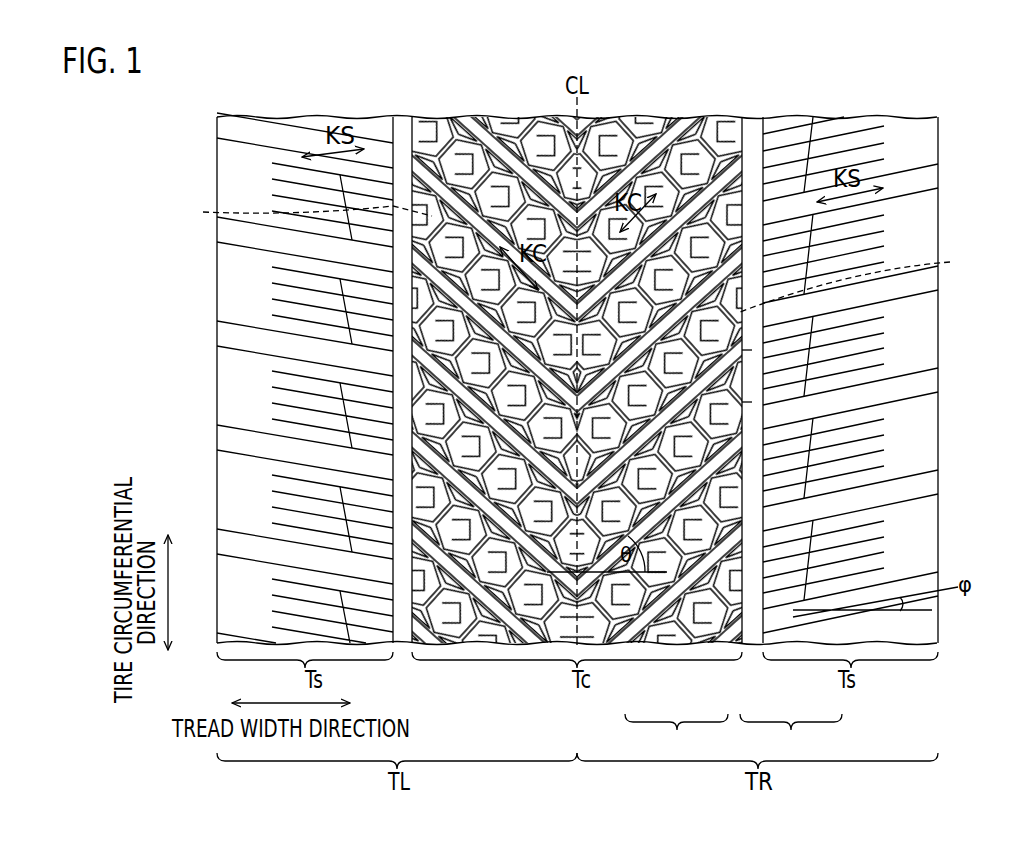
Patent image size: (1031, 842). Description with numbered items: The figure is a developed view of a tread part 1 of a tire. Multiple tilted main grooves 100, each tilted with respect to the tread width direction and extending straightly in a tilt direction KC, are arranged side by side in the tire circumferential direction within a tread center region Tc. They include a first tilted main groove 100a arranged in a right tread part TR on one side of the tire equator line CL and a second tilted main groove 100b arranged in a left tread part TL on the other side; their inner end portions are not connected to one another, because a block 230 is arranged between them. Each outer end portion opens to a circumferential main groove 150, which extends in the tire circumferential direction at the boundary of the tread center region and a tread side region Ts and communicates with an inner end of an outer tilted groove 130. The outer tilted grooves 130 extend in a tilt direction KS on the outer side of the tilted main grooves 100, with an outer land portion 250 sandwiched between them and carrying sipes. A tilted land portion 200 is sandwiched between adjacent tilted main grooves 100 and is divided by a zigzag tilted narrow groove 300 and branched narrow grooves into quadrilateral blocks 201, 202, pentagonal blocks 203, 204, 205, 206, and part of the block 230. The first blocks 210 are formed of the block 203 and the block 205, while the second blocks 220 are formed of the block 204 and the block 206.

The tread part 1 is at (866, 60).
The tilted main groove 100 is at (576, 331).
The first tilted main groove 100a is at (661, 352).
The second tilted main groove 100b is at (420, 178).
The outer tilted groove 130 is at (212, 130).
The circumferential main groove 150 is at (401, 110).
The tilted land portion 200 is at (414, 300).
The block 201 is at (748, 356).
The block 202 is at (748, 405).
The block 203 is at (790, 580).
The block 204 is at (690, 600).
The block 205 is at (742, 580).
The block 206 is at (655, 600).
The first blocks 210 is at (791, 736).
The second blocks 220 is at (676, 736).
The block 230 is at (596, 117).
The outer land portion 250 is at (222, 180).
The tilted narrow groove 300 is at (578, 253).